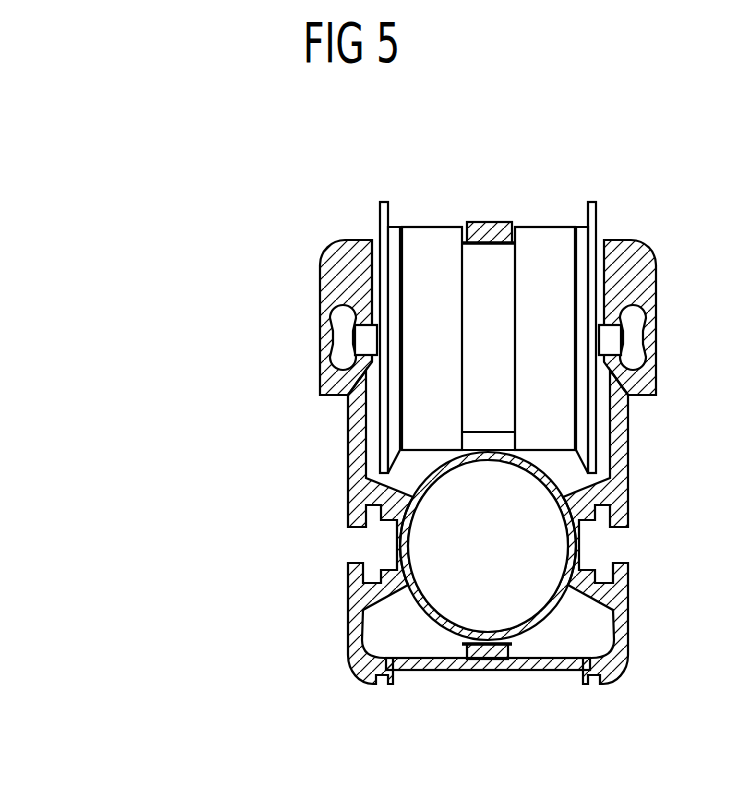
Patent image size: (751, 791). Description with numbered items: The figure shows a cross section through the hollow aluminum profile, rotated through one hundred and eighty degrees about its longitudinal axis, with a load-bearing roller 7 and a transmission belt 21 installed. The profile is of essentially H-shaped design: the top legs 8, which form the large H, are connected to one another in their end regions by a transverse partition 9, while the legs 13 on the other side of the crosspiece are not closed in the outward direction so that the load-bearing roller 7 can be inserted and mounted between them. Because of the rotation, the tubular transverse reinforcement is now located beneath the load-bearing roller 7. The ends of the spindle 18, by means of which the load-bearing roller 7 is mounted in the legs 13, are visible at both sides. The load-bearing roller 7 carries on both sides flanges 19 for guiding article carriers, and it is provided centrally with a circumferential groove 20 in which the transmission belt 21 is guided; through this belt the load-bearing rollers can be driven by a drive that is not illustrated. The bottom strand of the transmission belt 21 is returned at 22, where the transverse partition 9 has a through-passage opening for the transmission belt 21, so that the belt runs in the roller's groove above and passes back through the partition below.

The load-bearing roller 7 is at (543, 238).
The top legs 8 is at (358, 622).
The transverse partition 9 is at (432, 671).
The legs 13 is at (327, 376).
The spindle 18 is at (364, 341).
The flanges 19 is at (400, 240).
The circumferential groove 20 is at (466, 265).
The transmission belt 21 is at (484, 221).
The return of the bottom strand 22 is at (482, 664).